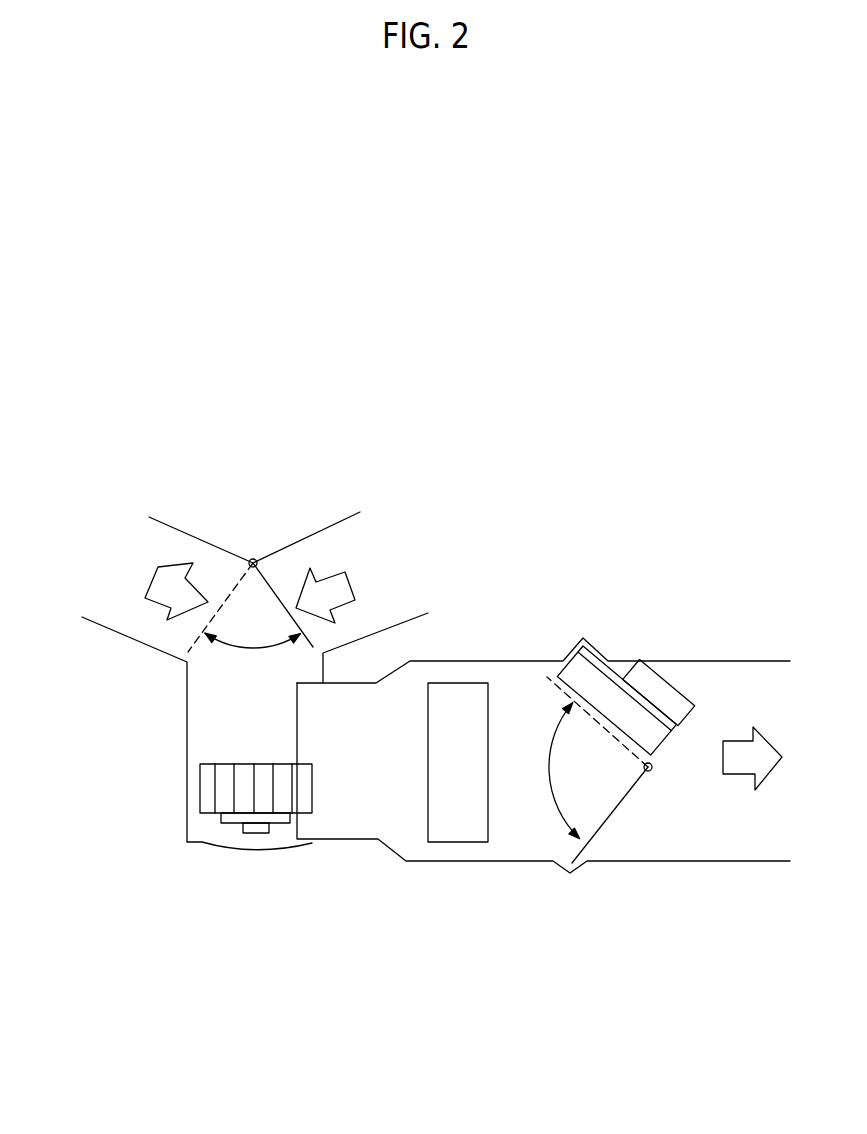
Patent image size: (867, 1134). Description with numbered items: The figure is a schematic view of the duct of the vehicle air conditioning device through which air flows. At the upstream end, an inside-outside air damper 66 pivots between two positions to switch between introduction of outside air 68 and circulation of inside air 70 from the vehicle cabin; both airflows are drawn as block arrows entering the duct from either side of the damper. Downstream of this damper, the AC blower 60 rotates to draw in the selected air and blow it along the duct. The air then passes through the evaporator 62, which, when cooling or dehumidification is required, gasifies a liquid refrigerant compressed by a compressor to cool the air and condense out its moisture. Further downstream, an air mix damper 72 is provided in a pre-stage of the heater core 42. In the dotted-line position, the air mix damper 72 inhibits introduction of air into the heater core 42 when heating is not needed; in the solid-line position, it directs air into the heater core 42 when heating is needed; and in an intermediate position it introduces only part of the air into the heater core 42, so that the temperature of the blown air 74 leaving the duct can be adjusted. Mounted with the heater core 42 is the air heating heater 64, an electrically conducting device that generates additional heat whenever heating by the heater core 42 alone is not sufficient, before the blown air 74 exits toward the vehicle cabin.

The heater core 42 is at (600, 650).
The AC blower 60 is at (257, 836).
The evaporator 62 is at (428, 800).
The air heating heater 64 is at (673, 687).
The inside-outside air damper 66 is at (268, 584).
The outside air 68 is at (153, 597).
The inside air 70 is at (352, 582).
The air mix damper 72 is at (606, 822).
The blown air 74 is at (742, 775).